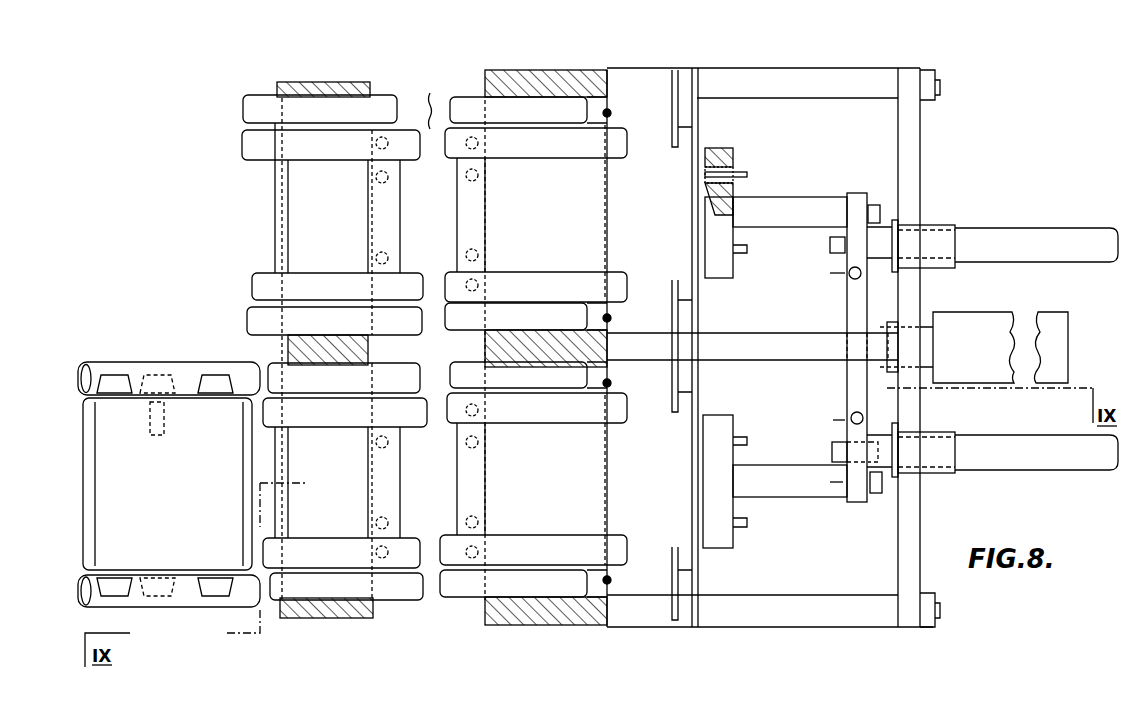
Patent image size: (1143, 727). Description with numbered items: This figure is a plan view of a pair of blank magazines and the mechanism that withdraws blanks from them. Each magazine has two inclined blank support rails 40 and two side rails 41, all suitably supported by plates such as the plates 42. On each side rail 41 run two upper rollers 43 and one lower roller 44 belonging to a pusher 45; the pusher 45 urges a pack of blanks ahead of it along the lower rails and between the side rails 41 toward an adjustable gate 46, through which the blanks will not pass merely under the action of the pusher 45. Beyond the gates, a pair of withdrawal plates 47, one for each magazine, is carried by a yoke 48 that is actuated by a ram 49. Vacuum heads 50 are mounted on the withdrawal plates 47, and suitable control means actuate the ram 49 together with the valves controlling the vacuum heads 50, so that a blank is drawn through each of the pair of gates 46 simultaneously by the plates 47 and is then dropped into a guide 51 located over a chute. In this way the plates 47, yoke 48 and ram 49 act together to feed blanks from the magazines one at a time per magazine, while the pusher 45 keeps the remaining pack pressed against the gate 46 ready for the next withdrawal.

The inclined blank support rails 40 is at (532, 408).
The side rails 41 is at (390, 587).
The plates 42 is at (335, 90).
The upper rollers 43 is at (116, 378).
The lower roller 44 is at (160, 378).
The pusher 45 is at (245, 468).
The adjustable gate 46 is at (610, 113).
The withdrawal plates 47 is at (722, 237).
The yoke 48 is at (857, 317).
The ram 49 is at (998, 327).
The vacuum heads 50 is at (700, 178).
The guide 51 is at (690, 610).